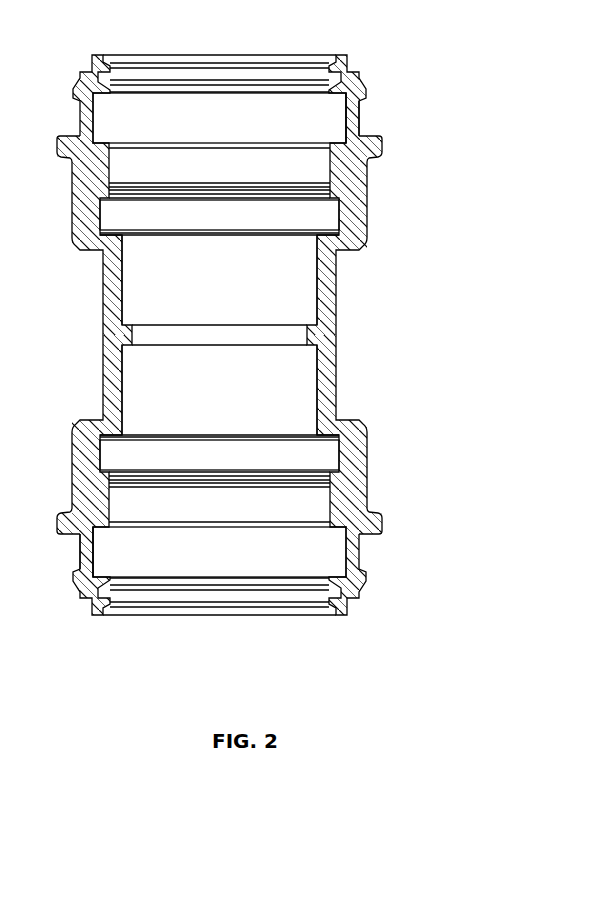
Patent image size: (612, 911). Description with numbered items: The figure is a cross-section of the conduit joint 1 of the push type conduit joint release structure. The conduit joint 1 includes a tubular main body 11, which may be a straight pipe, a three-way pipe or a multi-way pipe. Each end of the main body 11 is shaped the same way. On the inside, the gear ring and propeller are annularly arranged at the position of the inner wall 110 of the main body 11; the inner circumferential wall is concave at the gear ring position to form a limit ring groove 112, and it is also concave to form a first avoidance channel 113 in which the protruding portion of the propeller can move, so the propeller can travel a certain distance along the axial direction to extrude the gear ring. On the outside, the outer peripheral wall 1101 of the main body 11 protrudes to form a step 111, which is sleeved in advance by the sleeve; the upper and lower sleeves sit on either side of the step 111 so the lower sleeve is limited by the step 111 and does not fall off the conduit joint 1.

The conduit joint 1 is at (370, 190).
The main body 11 is at (326, 310).
The inner wall 110 is at (94, 115).
The step 111 is at (368, 93).
The outer peripheral wall 1101 is at (360, 118).
The limit ring groove 112 is at (341, 110).
The first avoidance channel 113 is at (302, 77).